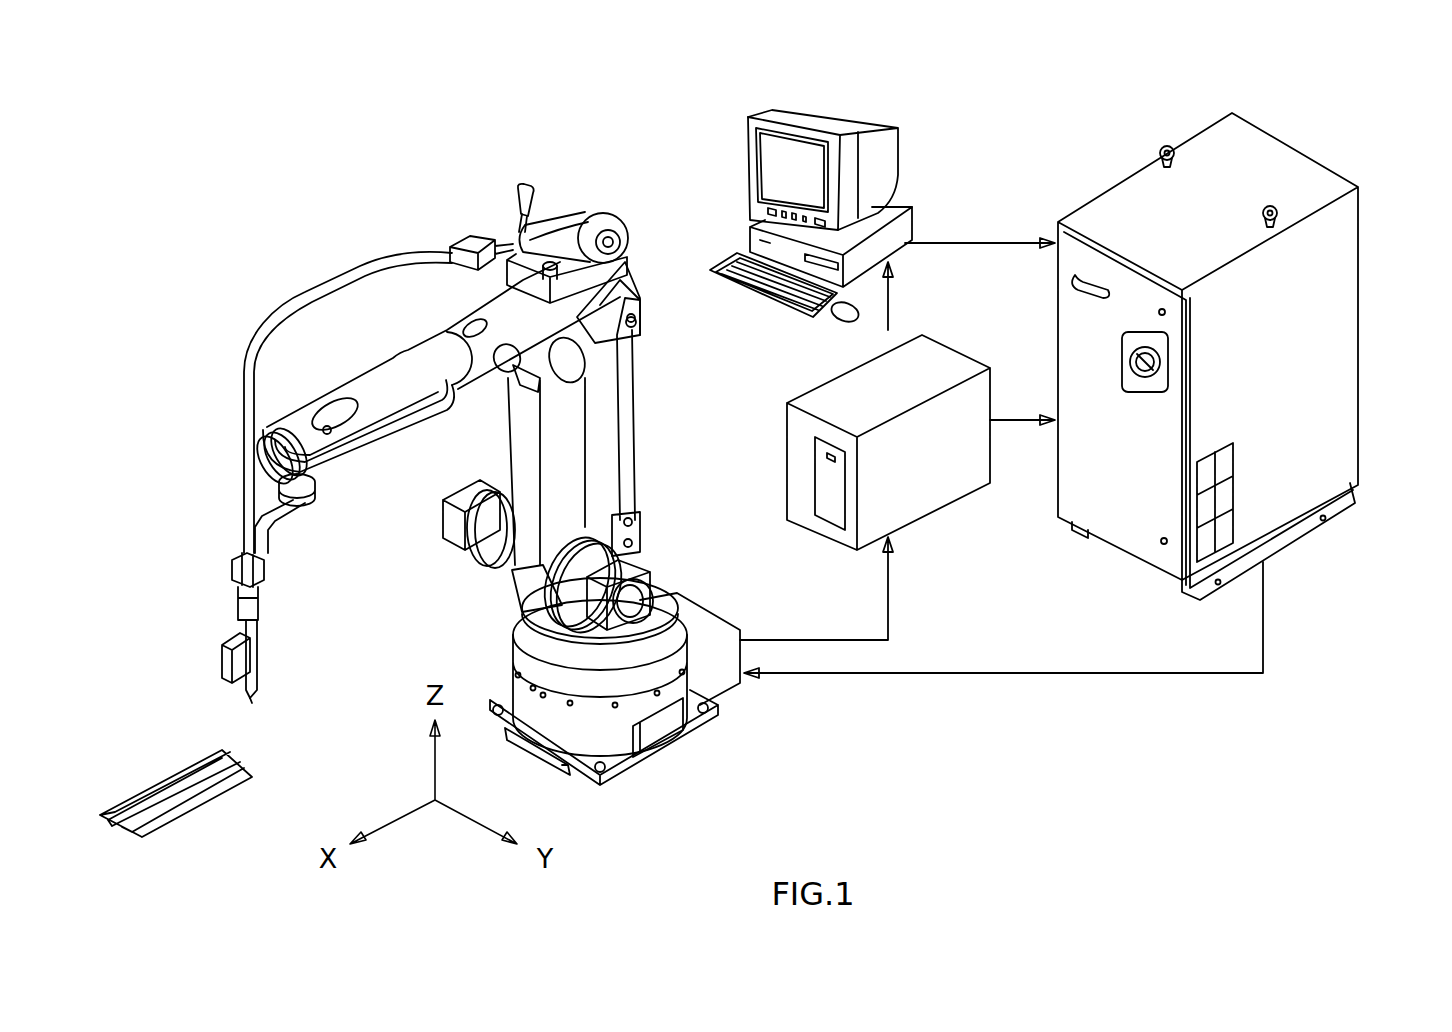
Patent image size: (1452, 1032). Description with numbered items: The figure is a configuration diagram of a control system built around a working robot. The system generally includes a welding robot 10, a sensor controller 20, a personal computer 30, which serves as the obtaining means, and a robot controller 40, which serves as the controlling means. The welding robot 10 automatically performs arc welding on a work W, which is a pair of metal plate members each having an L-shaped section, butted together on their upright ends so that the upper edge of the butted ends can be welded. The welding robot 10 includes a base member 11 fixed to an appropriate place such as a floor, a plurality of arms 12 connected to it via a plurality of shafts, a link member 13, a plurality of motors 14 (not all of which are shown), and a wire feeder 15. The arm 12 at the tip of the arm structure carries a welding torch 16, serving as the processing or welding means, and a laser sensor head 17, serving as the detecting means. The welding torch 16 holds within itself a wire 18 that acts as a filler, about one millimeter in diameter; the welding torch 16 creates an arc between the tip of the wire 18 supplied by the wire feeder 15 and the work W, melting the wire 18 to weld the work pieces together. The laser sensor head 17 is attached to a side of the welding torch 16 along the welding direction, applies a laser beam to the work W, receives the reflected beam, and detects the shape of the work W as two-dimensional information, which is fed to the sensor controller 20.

The welding robot 10 is at (565, 186).
The base member 11 is at (603, 740).
The arms 12 is at (490, 312).
The link member 13 is at (636, 433).
The motors 14 is at (455, 487).
The wire feeder 15 is at (595, 215).
The welding torch 16 is at (258, 680).
The laser sensor head 17 is at (222, 658).
The wire 18 is at (252, 703).
The sensor controller 20 is at (815, 390).
The personal computer 30 is at (808, 113).
The robot controller 40 is at (1360, 235).
The work W is at (160, 830).